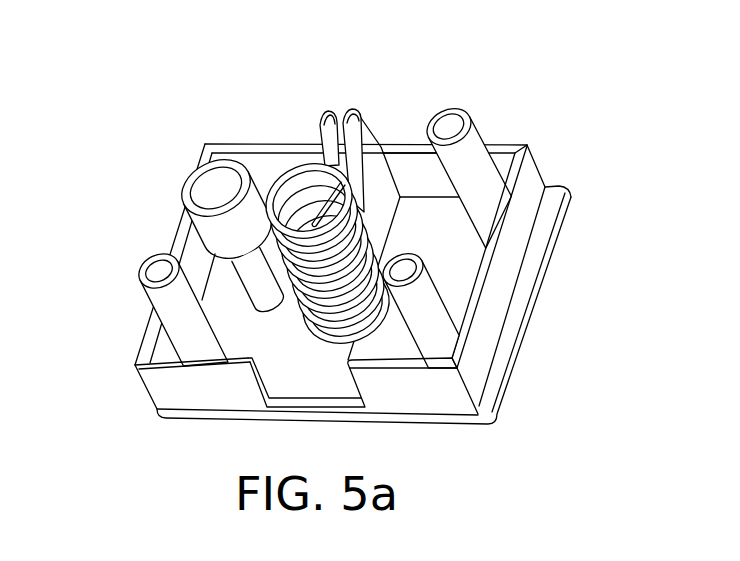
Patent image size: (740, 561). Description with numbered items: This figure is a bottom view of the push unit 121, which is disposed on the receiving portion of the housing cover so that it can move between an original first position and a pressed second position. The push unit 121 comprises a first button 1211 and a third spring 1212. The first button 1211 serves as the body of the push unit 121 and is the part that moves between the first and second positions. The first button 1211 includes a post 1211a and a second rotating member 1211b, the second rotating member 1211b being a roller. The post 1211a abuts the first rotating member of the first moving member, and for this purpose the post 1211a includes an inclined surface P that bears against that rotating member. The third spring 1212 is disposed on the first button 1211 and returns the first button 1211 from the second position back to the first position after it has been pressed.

The push unit 121 is at (128, 40).
The first button 1211 is at (347, 217).
The post 1211a is at (368, 135).
The second rotating member 1211b is at (210, 229).
The third spring 1212 is at (317, 273).
The inclined surface P is at (328, 138).